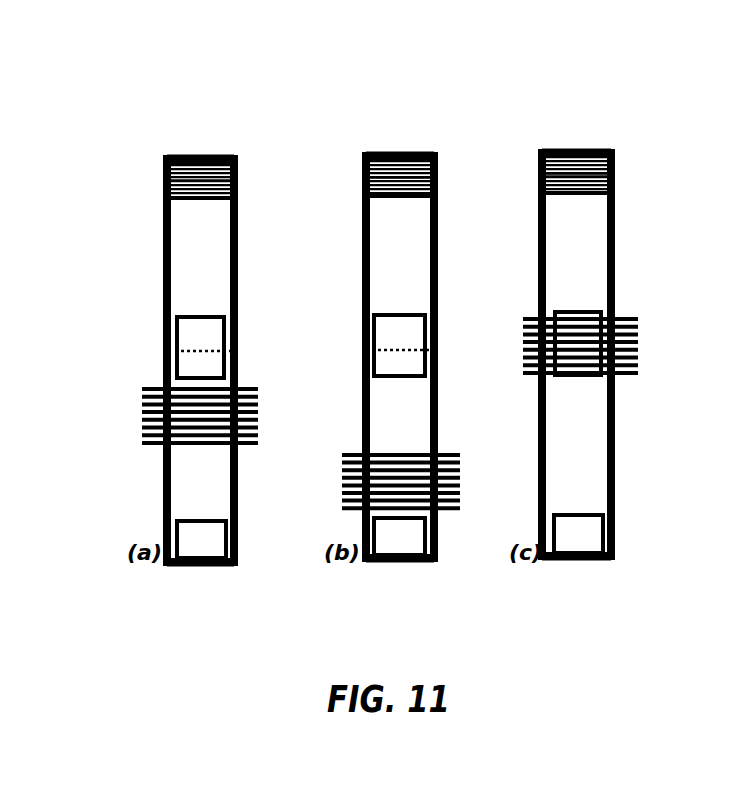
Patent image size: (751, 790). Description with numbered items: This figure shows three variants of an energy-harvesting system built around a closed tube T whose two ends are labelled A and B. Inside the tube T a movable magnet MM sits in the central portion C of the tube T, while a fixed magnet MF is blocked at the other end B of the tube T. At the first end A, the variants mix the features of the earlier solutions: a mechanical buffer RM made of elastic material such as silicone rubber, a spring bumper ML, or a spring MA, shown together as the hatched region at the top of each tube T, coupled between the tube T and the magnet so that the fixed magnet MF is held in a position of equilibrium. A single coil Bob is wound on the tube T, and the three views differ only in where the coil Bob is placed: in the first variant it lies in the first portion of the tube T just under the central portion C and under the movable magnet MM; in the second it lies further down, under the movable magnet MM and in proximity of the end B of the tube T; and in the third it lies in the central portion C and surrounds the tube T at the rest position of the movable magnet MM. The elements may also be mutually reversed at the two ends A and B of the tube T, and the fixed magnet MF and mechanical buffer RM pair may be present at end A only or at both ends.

The end A is at (208, 152).
The mechanical buffer RM is at (244, 174).
The spring bumper ML is at (455, 135).
The spring MA is at (441, 158).
The tube T is at (196, 250).
The movable magnet MM is at (183, 323).
The central portion C is at (242, 350).
The coil Bob is at (152, 426).
The fixed magnet MF is at (218, 548).
The end B is at (206, 572).